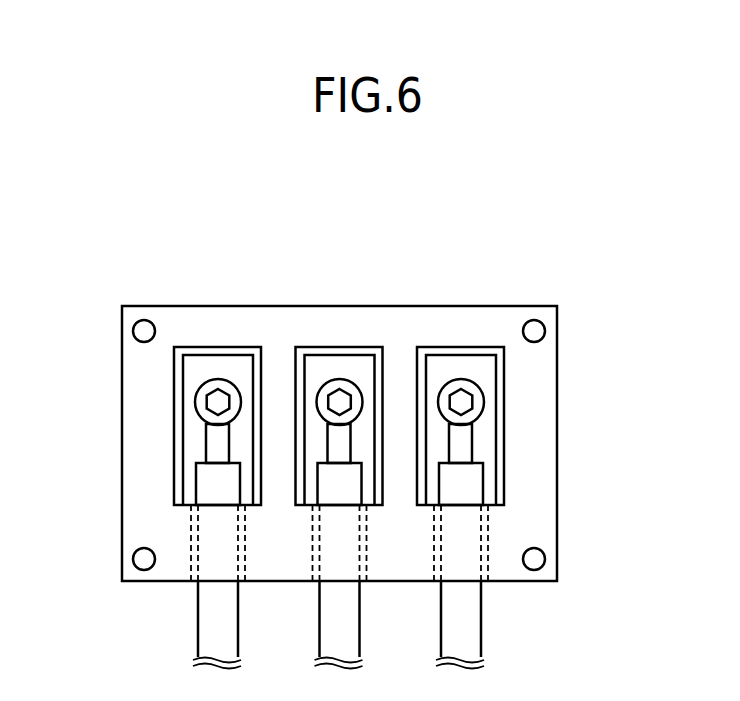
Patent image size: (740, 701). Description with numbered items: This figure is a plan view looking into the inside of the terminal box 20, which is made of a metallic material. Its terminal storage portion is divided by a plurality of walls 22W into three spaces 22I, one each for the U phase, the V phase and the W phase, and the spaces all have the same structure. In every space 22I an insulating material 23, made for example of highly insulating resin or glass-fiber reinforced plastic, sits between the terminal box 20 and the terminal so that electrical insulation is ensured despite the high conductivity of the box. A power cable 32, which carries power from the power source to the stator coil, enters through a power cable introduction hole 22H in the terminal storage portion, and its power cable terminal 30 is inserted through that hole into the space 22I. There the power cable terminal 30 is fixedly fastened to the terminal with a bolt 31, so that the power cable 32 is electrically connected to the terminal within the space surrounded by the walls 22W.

The terminal box 20 is at (103, 263).
The wall 22W is at (277, 367).
The space 22I is at (190, 379).
The power cable introduction hole 22H is at (190, 567).
The insulating material 23 is at (223, 352).
The power cable terminal 30 is at (210, 443).
The bolt 31 is at (217, 392).
The power cable 32 is at (230, 645).